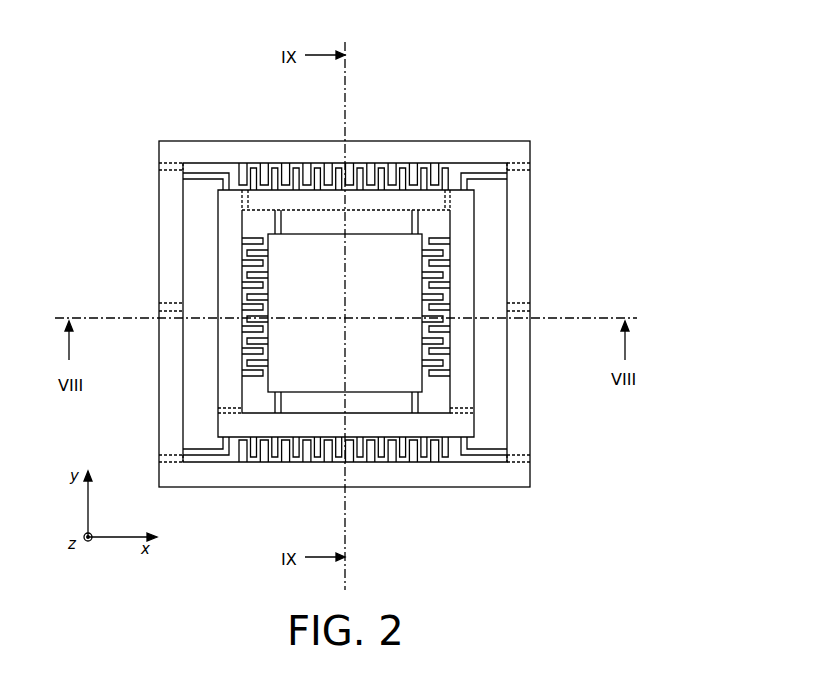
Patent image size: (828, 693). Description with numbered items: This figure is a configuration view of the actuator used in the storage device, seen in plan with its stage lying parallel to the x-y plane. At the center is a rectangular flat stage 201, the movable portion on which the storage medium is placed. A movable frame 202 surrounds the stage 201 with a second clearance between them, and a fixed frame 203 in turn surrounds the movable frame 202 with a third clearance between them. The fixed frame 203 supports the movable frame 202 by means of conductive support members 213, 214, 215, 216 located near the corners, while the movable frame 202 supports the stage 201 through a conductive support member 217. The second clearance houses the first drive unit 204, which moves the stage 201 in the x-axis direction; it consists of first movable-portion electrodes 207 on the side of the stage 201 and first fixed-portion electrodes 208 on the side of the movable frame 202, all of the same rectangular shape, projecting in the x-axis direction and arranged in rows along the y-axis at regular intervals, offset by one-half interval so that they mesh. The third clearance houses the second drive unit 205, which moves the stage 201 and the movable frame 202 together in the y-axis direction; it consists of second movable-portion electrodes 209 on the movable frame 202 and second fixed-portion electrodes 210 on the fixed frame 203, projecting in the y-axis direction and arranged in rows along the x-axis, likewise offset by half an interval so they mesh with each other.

The stage 201 is at (370, 296).
The movable frame 202 is at (455, 312).
The fixed frame 203 is at (515, 402).
The first drive unit 204 is at (92, 267).
The second drive unit 205 is at (455, 101).
The first movable-portion electrodes 207 is at (245, 280).
The first fixed-portion electrodes 208 is at (245, 292).
The second movable-portion electrodes 209 is at (393, 176).
The second fixed-portion electrodes 210 is at (380, 182).
The conductive support member 213 is at (486, 451).
The conductive support member 214 is at (490, 180).
The conductive support member 215 is at (209, 176).
The conductive support member 216 is at (213, 450).
The conductive support member 217 is at (270, 404).